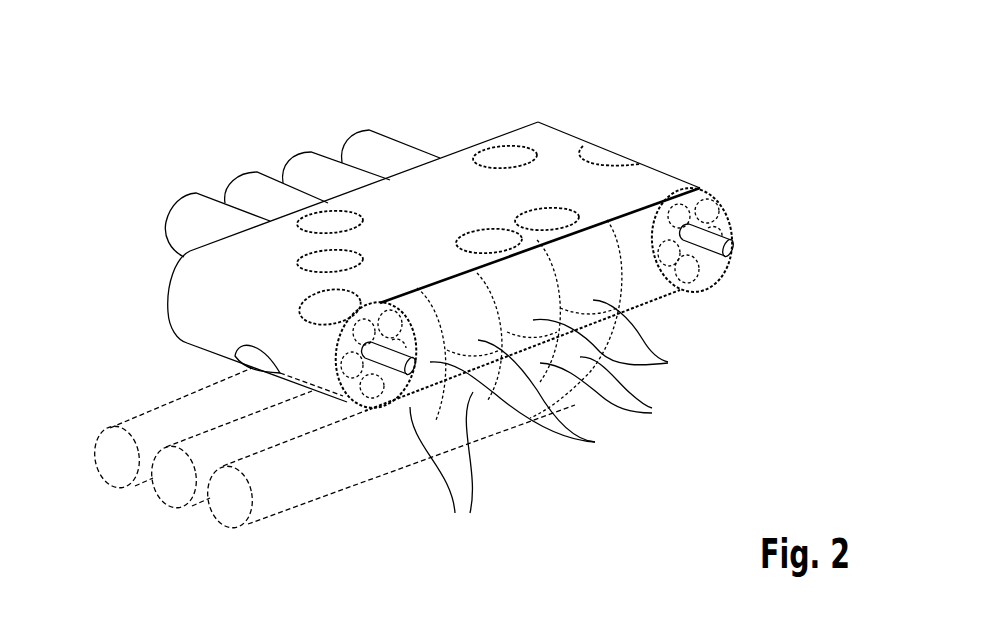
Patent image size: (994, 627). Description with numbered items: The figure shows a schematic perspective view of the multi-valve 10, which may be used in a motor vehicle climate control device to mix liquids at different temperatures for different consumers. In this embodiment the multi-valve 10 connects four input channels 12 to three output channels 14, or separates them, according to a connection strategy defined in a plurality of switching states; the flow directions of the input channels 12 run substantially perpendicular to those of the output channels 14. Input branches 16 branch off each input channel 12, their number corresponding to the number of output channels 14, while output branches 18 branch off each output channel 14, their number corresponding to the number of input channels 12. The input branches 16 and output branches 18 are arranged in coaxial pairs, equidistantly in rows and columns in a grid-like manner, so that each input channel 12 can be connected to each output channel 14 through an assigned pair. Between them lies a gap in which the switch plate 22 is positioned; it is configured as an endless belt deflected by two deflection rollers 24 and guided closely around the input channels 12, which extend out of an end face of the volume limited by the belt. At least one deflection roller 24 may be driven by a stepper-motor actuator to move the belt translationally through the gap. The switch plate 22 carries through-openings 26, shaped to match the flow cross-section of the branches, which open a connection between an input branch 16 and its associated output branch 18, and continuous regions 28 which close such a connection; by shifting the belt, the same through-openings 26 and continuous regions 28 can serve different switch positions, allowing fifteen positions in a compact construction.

The multi-valve 10 is at (577, 95).
The input channels 12 is at (195, 213).
The output channels 14 is at (245, 470).
The input branches 16 is at (563, 377).
The output branches 18 is at (545, 454).
The switch plate 22 is at (637, 292).
The deflection rollers 24 is at (717, 223).
The through-openings 26 is at (327, 262).
The continuous regions 28 is at (467, 222).